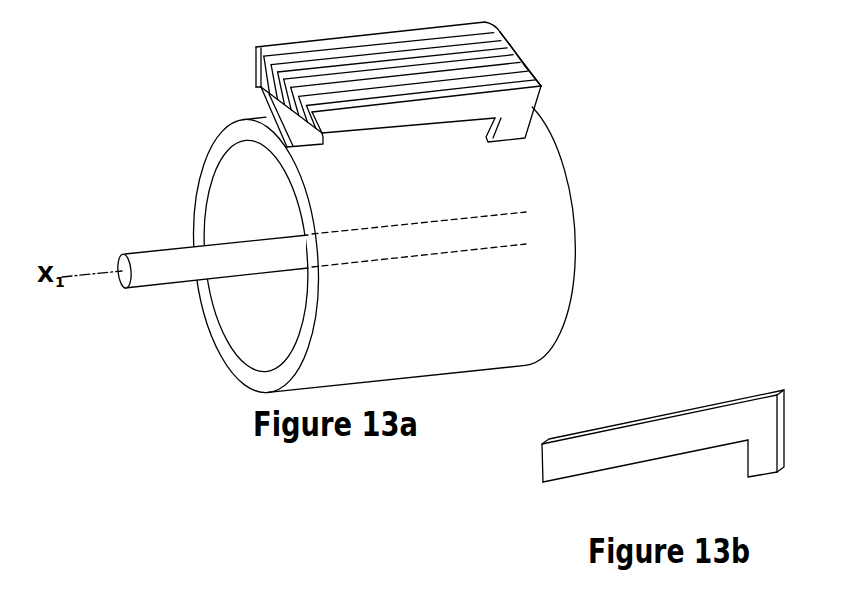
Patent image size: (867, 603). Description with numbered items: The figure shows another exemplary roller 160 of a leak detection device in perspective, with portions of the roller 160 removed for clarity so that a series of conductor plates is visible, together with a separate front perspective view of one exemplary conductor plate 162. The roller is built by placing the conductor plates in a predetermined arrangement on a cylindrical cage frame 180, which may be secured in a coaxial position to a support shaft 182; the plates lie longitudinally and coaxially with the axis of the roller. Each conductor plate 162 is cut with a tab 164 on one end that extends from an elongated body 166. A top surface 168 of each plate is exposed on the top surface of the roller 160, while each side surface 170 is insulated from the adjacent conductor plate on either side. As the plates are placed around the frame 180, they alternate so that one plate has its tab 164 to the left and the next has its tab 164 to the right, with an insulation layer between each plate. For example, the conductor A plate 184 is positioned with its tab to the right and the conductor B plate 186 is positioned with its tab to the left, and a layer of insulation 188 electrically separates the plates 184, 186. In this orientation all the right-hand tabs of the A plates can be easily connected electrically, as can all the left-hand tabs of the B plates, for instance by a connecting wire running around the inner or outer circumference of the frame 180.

In FIG. 13a, the roller 160 is at (445, 83).
In FIG. 13b, the conductor plate 162 is at (676, 434).
In FIG. 13b, the tab 164 is at (747, 455).
In FIG. 13b, the elongated body 166 is at (663, 459).
In FIG. 13b, the top surface 168 is at (621, 419).
In FIG. 13b, the side surface 170 is at (616, 456).
In FIG. 13a, the cylindrical cage frame 180 is at (579, 278).
In FIG. 13a, the support shaft 182 is at (167, 252).
In FIG. 13a, the conductor "A" plate 184 is at (541, 84).
In FIG. 13a, the conductor "B" plate 186 is at (528, 57).
In FIG. 13a, the layer of insulation 188 is at (535, 72).